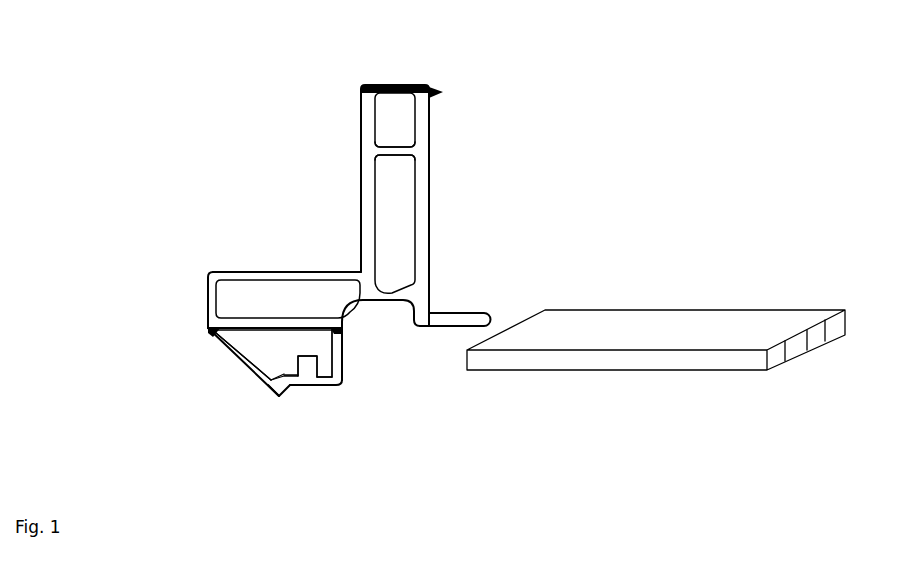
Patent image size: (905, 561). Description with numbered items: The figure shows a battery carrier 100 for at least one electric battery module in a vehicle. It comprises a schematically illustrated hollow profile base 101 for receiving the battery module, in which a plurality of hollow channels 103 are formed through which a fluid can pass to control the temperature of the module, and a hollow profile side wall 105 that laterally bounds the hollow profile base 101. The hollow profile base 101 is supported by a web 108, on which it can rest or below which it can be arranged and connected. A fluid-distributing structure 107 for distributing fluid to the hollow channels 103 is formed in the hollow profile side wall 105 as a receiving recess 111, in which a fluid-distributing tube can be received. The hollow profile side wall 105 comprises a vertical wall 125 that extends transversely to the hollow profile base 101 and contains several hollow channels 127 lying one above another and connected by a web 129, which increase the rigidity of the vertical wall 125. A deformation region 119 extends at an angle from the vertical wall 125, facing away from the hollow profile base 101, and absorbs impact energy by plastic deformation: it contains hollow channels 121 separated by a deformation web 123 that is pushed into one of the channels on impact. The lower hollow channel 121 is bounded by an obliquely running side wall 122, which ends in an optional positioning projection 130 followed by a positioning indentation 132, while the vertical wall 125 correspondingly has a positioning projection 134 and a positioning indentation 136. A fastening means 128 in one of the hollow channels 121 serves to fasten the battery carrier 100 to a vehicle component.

The battery carrier 100 is at (234, 138).
The hollow profile base 101 is at (617, 360).
The hollow channels 103 is at (837, 327).
The hollow profile side wall 105 is at (314, 252).
The fluid-distributing structure 107 is at (394, 338).
The web 108 is at (443, 323).
The receiving recess 111 is at (352, 312).
The deformation region 119 is at (203, 266).
The hollow channels 121 is at (232, 292).
The side wall 122 is at (230, 357).
The deformation web 123 is at (208, 335).
The vertical wall 125 is at (353, 79).
The hollow channel 127 is at (400, 137).
The fastening means 128 is at (320, 390).
The web 129 is at (403, 150).
The positioning projection 130 is at (278, 397).
The positioning indentation 132 is at (288, 388).
The positioning projection 134 is at (438, 90).
The positioning indentation 136 is at (424, 83).